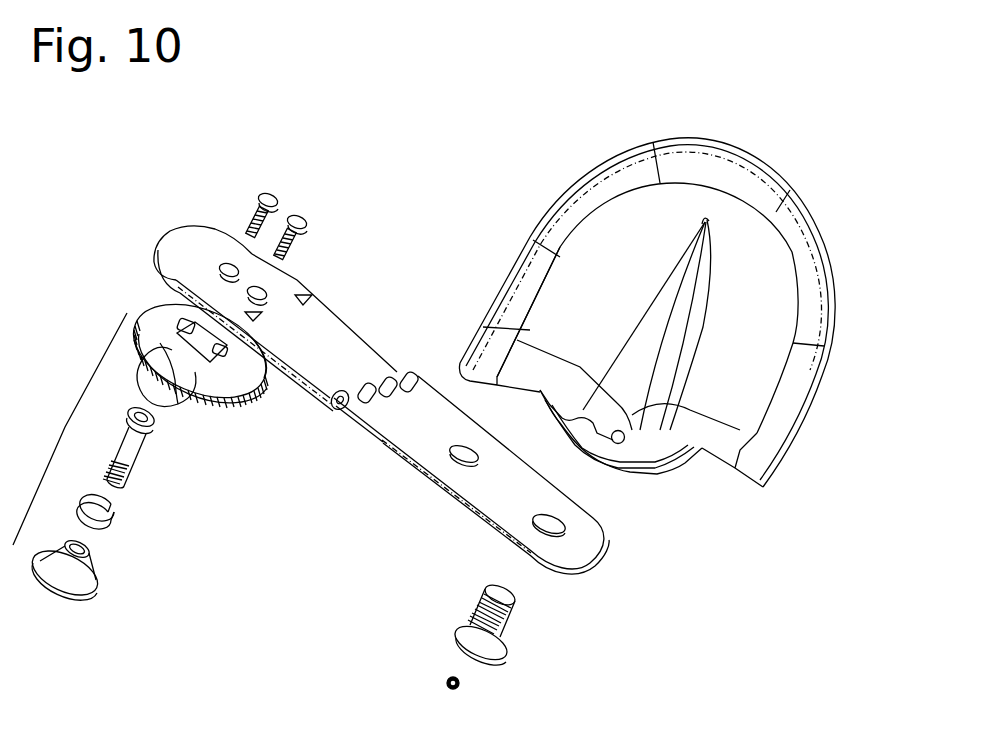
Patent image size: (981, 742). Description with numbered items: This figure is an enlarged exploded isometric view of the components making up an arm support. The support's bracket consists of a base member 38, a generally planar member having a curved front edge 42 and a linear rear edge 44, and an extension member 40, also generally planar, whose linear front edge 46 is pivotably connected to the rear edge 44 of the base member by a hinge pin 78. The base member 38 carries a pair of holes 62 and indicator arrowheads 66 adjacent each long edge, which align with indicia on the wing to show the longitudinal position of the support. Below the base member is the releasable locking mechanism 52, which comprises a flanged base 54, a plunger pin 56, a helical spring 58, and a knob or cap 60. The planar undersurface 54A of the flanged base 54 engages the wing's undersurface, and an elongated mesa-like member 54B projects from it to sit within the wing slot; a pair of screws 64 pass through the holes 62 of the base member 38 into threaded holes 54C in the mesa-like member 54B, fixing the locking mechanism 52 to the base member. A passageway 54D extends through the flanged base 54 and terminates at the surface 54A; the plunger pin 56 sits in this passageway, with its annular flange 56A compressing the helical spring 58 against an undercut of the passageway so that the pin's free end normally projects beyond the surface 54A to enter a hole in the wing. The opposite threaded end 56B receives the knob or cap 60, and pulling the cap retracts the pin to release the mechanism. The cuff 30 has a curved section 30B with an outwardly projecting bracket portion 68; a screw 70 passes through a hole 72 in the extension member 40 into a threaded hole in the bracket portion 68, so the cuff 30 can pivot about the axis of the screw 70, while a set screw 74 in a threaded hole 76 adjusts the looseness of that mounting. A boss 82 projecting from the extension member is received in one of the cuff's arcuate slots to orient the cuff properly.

The cuff 30 is at (540, 220).
The curved section 30B is at (753, 287).
The base member 38 is at (193, 260).
The extension member 40 is at (461, 511).
The curved front edge 42 is at (160, 247).
The linear rear edge 44 is at (400, 372).
The linear front edge 46 is at (355, 422).
The releasable locking mechanism 52 is at (65, 427).
The flanged base 54 is at (163, 390).
The undersurface 54A is at (235, 372).
The mesa-like member 54B is at (190, 350).
The threaded holes 54C is at (216, 352).
The passageway 54D is at (175, 375).
The plunger pin 56 is at (137, 447).
The annular flange 56A is at (148, 421).
The threaded end 56B is at (122, 482).
The helical spring 58 is at (110, 514).
The knob or cap 60 is at (93, 588).
The holes 62 is at (248, 285).
The screws 64 is at (302, 224).
The arrowheads 66 is at (312, 296).
The bracket portion 68 is at (620, 478).
The screw 70 is at (510, 637).
The hole 72 is at (557, 532).
The set screw 74 is at (463, 692).
The threaded hole 76 is at (624, 442).
The hinge pin 78 is at (340, 408).
The boss 82 is at (458, 467).